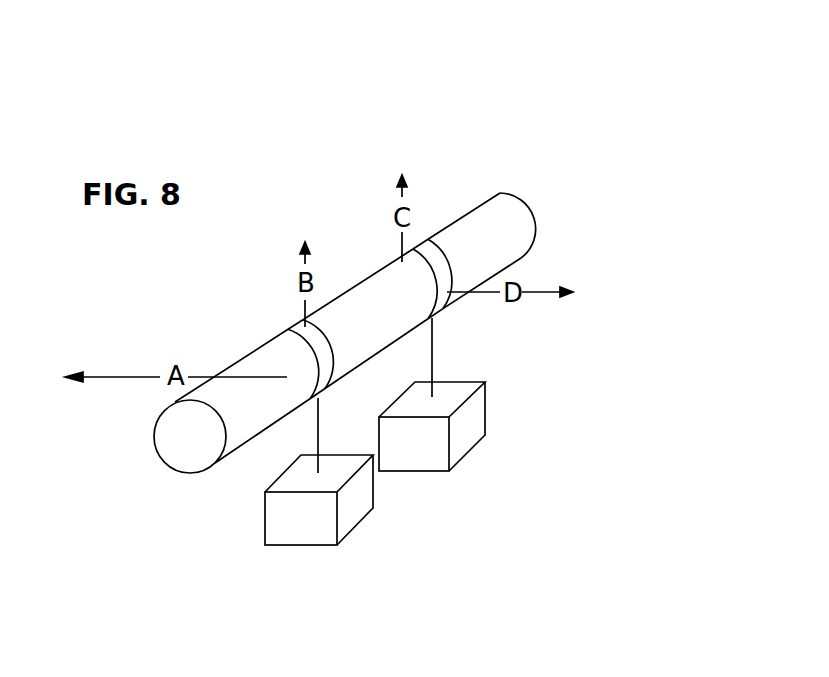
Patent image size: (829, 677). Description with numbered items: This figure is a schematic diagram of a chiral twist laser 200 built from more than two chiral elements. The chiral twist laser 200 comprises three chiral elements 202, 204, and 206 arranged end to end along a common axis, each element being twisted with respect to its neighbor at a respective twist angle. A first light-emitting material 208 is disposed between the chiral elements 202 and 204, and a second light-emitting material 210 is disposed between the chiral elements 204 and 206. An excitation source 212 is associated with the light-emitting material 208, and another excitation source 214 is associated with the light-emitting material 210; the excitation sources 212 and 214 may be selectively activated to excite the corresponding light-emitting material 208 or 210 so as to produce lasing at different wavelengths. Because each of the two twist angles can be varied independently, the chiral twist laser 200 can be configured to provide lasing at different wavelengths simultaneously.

The chiral twist laser 200 is at (336, 254).
The chiral element 202 is at (225, 365).
The chiral element 204 is at (350, 305).
The chiral element 206 is at (485, 243).
The light-emitting material 208 is at (285, 331).
The light-emitting material 210 is at (410, 250).
The excitation source 212 is at (273, 532).
The excitation source 214 is at (473, 438).